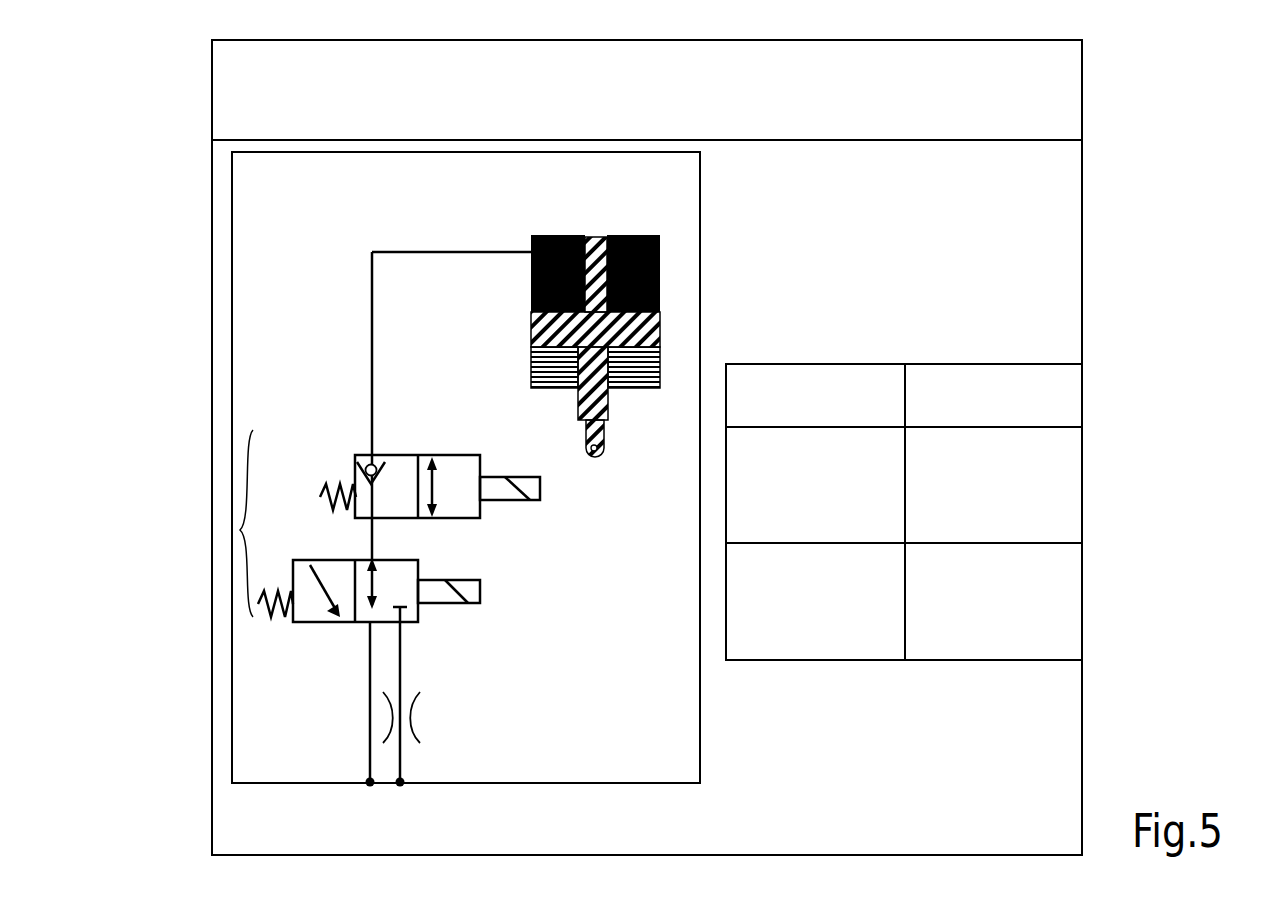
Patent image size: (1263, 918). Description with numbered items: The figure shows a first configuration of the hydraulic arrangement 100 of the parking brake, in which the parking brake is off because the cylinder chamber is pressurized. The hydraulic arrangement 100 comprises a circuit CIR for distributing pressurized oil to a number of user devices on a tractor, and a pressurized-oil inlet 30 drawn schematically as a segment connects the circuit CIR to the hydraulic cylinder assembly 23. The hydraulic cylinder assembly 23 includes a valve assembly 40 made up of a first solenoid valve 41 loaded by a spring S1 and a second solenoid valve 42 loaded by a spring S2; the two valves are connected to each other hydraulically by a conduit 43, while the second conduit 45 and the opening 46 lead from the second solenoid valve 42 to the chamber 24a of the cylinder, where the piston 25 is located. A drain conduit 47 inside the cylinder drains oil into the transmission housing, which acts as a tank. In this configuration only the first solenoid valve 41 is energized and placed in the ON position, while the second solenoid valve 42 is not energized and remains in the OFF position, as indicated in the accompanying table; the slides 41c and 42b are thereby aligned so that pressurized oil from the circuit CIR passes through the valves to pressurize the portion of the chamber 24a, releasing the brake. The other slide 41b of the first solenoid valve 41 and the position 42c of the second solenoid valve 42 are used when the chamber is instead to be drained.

The hydraulic arrangement 100 is at (712, 346).
The pressurized-oil distribution circuit CIR is at (700, 745).
The hydraulic cylinder assembly 23 is at (678, 299).
The chamber 24a is at (660, 250).
The piston rod 25 is at (600, 238).
The opening 46 is at (482, 252).
The second conduit 45 is at (372, 325).
The second solenoid valve 42 is at (498, 500).
The slide of second solenoid valve 42b is at (358, 458).
The open position of second valve 42c is at (453, 462).
The spring of second valve S2 is at (319, 497).
The conduit 43 is at (376, 538).
The first solenoid valve 41 is at (442, 602).
The slide of first solenoid valve 41b is at (316, 622).
The slide of first solenoid valve 41c is at (414, 622).
The spring of first valve S1 is at (270, 618).
The valve assembly 40 is at (240, 530).
The pressurized-oil inlet 30 is at (368, 688).
The drain conduit 47 is at (402, 675).